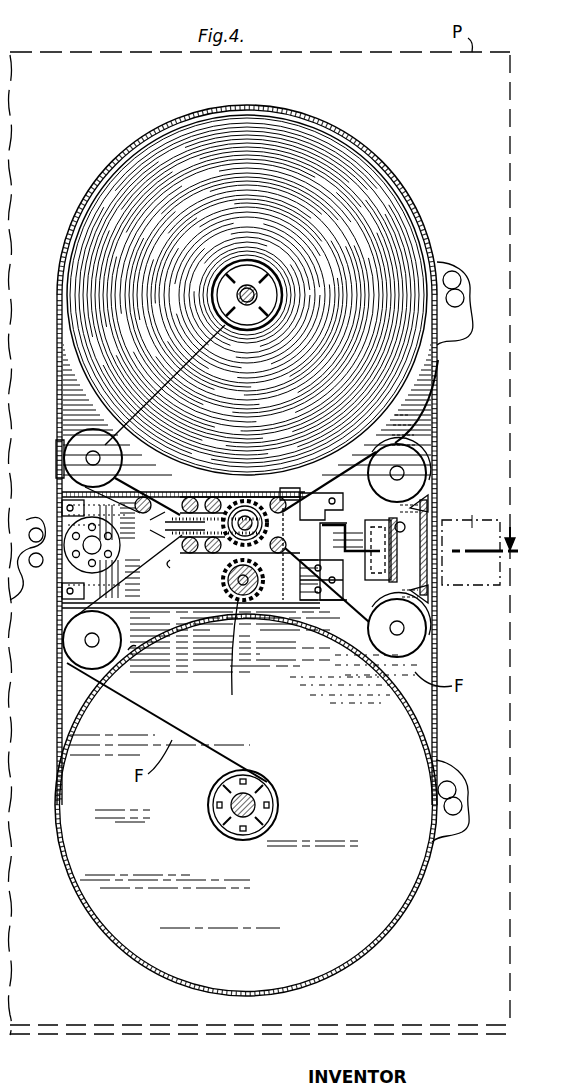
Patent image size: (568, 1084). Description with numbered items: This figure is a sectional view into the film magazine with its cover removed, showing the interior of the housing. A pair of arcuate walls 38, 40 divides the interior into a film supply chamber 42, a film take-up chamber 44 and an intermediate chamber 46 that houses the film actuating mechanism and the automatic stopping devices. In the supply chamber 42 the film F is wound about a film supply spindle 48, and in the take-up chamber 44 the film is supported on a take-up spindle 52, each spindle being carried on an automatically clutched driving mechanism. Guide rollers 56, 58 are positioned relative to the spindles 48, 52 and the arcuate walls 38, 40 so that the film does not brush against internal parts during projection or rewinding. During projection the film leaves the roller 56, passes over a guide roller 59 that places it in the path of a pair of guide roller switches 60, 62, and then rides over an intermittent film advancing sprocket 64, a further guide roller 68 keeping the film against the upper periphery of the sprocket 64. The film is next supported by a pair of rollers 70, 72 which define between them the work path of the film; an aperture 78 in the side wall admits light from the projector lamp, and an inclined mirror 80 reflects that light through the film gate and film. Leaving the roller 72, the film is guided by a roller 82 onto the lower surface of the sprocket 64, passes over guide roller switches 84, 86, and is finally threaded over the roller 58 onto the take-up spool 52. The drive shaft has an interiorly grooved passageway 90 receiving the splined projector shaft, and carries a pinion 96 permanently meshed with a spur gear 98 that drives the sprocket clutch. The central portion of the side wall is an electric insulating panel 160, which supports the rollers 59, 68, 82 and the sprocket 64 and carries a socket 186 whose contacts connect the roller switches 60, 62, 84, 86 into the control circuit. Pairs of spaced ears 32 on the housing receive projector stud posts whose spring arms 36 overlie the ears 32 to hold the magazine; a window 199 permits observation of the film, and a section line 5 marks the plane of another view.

The film supply chamber 42 is at (373, 192).
The film supply spindle 48 is at (282, 266).
The film take-up chamber 44 is at (383, 918).
The take-up spindle 52 is at (276, 789).
The spaced ears 32 is at (458, 320).
The spring arms 36 is at (452, 271).
The arcuate wall 38 is at (383, 430).
The arcuate wall 40 is at (335, 645).
The intermediate chamber 46 is at (423, 442).
The guide roller 56 is at (78, 440).
The guide roller 58 is at (80, 655).
The guide roller 59 is at (143, 496).
The guide roller switch 60 is at (192, 496).
The guide roller switch 62 is at (215, 496).
The intermittent film advancing sprocket 64 is at (250, 504).
The guide roller 68 is at (282, 496).
The roller 70 is at (420, 470).
The roller 72 is at (420, 636).
The aperture 78 is at (398, 522).
The inclined mirror 80 is at (397, 576).
The roller 82 is at (288, 542).
The guide roller switch 84 is at (212, 556).
The guide roller switch 86 is at (187, 556).
The interiorly grooved passageway 90 is at (232, 695).
The pinion 96 is at (225, 588).
The spur gear 98 is at (338, 506).
The electric insulating panel 160 is at (70, 600).
The socket 186 is at (68, 588).
The window 199 is at (58, 460).
The section line 5 is at (480, 535).